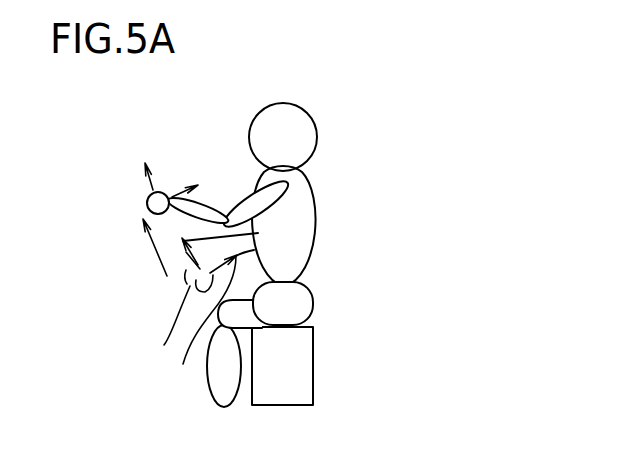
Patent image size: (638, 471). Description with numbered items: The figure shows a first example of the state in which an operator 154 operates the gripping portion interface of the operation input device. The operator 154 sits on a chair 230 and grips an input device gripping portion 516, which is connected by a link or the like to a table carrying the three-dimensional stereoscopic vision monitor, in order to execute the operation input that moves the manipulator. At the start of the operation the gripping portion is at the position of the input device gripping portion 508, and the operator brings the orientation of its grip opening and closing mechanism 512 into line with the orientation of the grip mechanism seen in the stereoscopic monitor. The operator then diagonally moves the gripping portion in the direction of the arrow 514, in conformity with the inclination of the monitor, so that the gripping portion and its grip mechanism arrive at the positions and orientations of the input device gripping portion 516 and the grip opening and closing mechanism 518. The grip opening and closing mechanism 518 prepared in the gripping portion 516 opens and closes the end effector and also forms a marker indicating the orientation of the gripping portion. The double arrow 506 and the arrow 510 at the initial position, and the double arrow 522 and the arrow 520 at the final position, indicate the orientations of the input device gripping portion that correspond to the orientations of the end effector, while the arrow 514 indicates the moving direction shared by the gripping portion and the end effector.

The operator 154 is at (295, 205).
The chair 230 is at (303, 363).
The double arrow 506 is at (198, 325).
The input device gripping portion 508 is at (154, 327).
The arrow 510 is at (258, 233).
The grip opening and closing mechanism 512 is at (196, 268).
The arrow 514 is at (156, 252).
The input device gripping portion 516 is at (148, 205).
The grip opening and closing mechanism 518 is at (148, 192).
The arrow 520 is at (145, 167).
The double arrow 522 is at (193, 183).